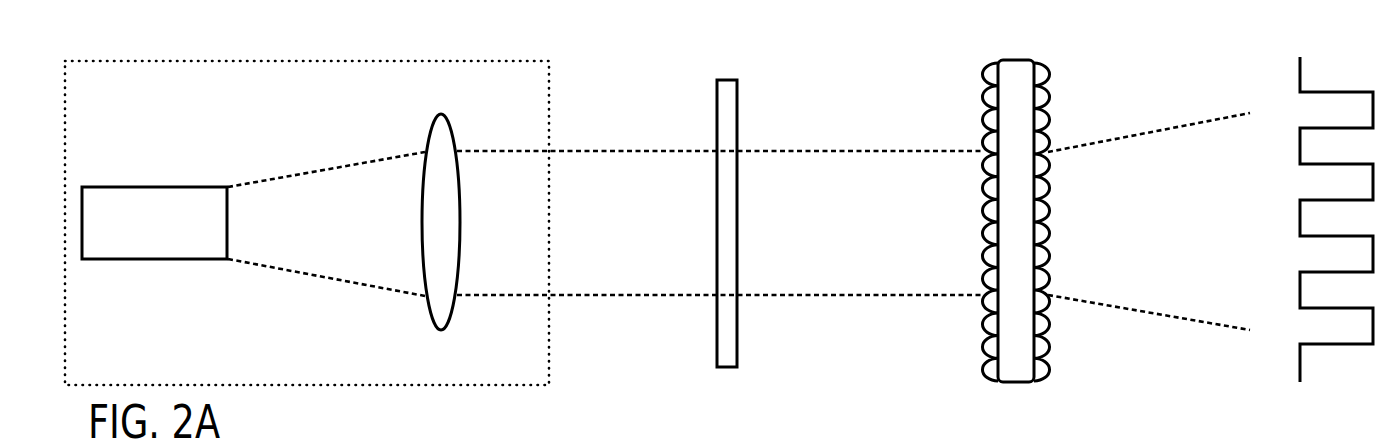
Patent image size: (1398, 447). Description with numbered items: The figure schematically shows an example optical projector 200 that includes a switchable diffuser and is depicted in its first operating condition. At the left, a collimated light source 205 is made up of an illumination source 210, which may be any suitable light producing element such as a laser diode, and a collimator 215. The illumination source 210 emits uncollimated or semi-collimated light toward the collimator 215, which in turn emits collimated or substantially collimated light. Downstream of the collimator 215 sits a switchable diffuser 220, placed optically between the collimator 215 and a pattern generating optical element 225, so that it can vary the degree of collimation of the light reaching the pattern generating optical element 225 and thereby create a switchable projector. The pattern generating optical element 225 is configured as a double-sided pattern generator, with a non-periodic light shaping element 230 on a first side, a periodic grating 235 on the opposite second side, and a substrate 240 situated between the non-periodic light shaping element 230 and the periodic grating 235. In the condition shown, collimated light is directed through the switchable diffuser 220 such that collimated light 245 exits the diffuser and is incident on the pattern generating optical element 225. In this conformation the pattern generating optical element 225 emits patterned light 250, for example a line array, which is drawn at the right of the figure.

The optical projector 200 is at (195, 36).
The collimated light source 205 is at (476, 61).
The illumination source 210 is at (169, 236).
The collimator 215 is at (441, 115).
The switchable diffuser 220 is at (725, 80).
The pattern generating optical element 225 is at (1034, 32).
The non-periodic light shaping element 230 is at (985, 70).
The periodic grating 235 is at (1048, 78).
The substrate 240 is at (1015, 383).
The collimated light 245 is at (904, 124).
The patterned light 250 is at (1306, 44).